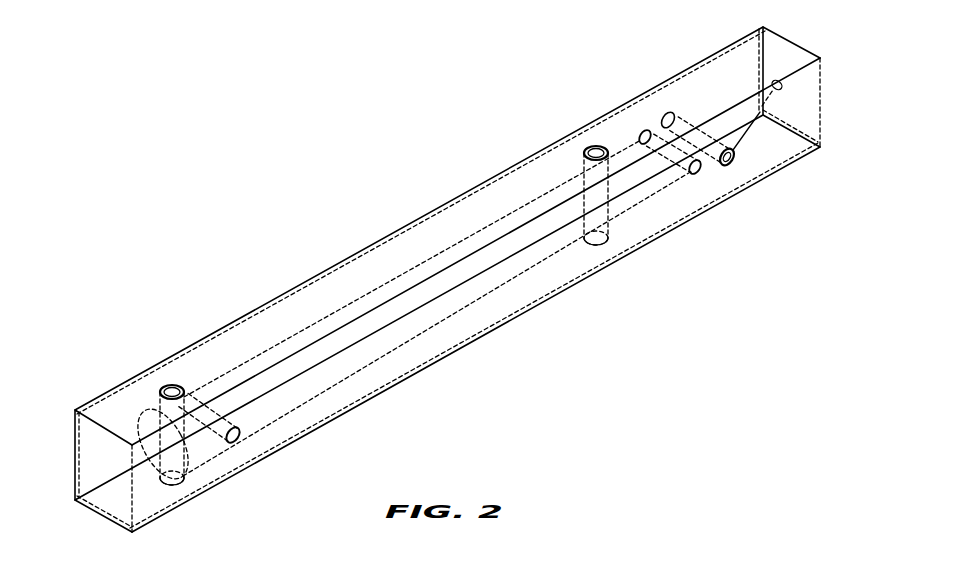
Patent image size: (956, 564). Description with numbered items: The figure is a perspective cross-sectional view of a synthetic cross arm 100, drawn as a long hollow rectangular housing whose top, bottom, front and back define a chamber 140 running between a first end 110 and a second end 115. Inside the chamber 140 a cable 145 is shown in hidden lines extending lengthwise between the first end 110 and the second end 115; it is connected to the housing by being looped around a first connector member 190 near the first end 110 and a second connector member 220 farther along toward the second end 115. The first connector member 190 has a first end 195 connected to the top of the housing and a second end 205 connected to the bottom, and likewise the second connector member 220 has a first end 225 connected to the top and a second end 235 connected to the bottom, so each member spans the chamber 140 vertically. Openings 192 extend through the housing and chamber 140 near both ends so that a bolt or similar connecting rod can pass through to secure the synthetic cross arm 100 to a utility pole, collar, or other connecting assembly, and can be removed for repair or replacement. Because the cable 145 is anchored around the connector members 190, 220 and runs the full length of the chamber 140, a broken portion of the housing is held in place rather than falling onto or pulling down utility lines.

The synthetic cross arm 100 is at (415, 128).
The first end 110 is at (93, 457).
The second end 115 is at (822, 93).
The chamber 140 is at (316, 283).
The cable 145 is at (413, 277).
The first connector member 190 is at (146, 432).
The openings 192 is at (206, 410).
The first end of first connector member 195 is at (168, 384).
The second end of first connector member 205 is at (177, 484).
The second connector member 220 is at (580, 180).
The first end of second connector member 225 is at (595, 144).
The second end of second connector member 235 is at (605, 250).